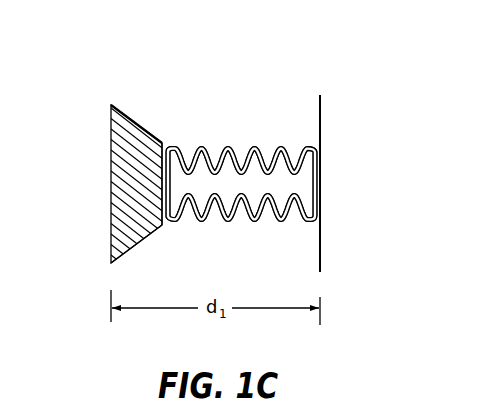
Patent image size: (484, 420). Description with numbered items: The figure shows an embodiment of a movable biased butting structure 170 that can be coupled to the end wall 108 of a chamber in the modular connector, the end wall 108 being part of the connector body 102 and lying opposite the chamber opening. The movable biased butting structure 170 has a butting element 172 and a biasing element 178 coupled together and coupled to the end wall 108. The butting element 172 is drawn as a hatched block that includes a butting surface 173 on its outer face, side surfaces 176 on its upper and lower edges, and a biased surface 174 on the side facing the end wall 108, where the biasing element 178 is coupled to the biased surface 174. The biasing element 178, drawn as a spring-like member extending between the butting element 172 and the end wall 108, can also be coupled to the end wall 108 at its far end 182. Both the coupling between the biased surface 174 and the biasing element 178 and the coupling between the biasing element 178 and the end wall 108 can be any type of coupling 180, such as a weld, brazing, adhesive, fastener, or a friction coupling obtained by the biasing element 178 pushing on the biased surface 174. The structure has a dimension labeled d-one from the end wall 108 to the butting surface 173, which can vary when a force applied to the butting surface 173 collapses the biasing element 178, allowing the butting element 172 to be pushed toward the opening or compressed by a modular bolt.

The movable biased butting structure 170 is at (119, 84).
The butting element 172 is at (162, 144).
The butting surface 173 is at (110, 185).
The biased surface 174 is at (168, 152).
The side surfaces 176 is at (128, 118).
The biasing element 178 is at (258, 222).
The coupling 180 is at (188, 196).
The spring contact end 182 is at (317, 160).
The body 102 is at (363, 193).
The end wall 108 is at (323, 249).